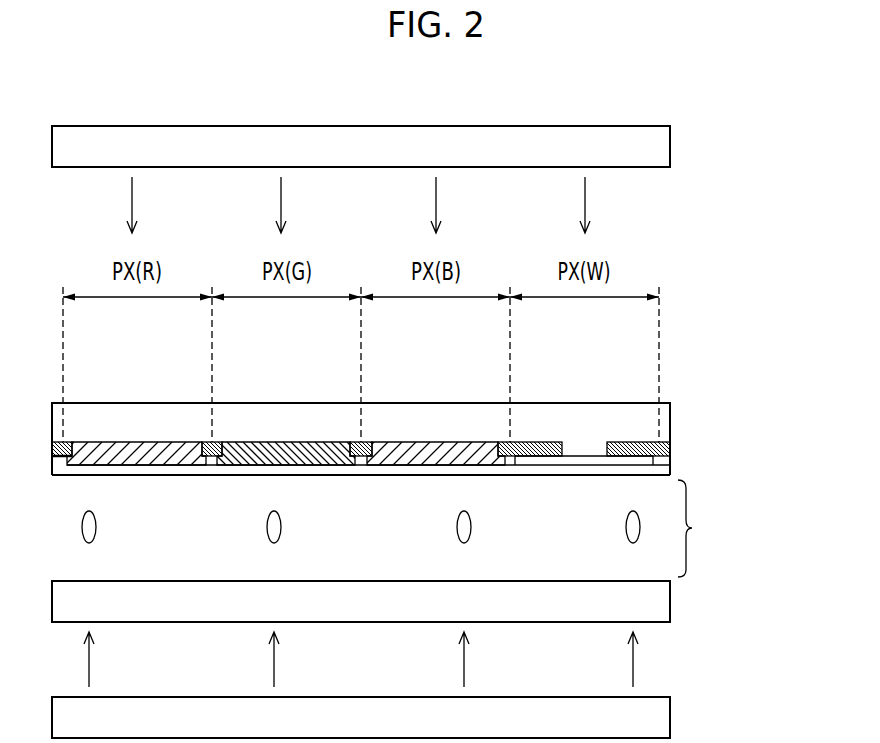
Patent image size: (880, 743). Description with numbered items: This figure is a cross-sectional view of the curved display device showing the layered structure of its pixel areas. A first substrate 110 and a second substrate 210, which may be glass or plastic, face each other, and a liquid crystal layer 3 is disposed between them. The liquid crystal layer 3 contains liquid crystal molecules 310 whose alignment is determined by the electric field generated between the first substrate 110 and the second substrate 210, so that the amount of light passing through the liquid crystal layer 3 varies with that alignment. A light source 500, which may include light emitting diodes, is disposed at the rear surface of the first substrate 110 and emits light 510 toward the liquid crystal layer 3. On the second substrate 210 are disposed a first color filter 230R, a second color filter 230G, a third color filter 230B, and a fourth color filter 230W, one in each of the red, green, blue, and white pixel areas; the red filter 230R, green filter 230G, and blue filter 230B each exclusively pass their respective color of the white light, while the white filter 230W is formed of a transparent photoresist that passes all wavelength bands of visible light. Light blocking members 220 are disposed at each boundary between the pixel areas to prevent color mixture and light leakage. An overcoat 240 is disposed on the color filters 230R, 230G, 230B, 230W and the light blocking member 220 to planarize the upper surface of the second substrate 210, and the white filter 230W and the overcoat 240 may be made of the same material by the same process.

The light source 500 is at (658, 146).
The light 510 is at (633, 665).
The first substrate 110 is at (658, 600).
The liquid crystal layer 3 is at (693, 528).
The liquid crystal molecules 310 is at (471, 525).
The overcoat 240 is at (664, 468).
The light blocking member 220 is at (670, 445).
The second substrate 210 is at (663, 420).
The first color filter 230R is at (128, 455).
The second color filter 230G is at (284, 455).
The third color filter 230B is at (461, 455).
The fourth color filter 230W is at (581, 455).